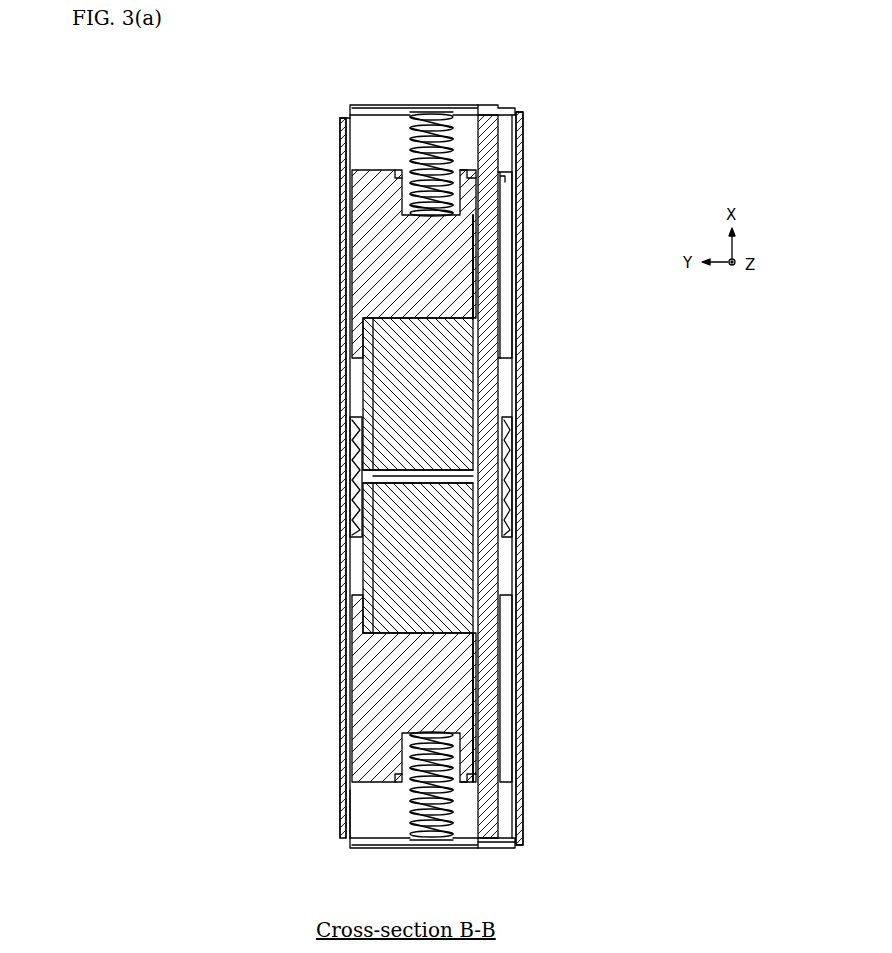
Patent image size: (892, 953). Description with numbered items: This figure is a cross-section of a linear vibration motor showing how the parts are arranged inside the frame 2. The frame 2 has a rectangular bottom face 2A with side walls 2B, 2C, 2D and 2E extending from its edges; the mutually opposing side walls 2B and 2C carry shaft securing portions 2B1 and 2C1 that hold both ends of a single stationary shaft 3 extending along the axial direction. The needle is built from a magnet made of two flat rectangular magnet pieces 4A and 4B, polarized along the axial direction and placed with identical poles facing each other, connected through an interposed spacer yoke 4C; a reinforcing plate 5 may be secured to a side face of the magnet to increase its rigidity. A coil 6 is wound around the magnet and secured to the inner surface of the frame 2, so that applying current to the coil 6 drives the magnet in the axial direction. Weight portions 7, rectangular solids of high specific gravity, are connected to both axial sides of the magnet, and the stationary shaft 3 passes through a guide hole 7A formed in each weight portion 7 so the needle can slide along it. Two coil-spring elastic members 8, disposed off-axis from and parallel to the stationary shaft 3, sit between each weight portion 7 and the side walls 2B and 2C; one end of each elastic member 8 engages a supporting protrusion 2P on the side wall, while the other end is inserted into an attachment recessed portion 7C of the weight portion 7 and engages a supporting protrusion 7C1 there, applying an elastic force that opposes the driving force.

The frame 2 is at (518, 846).
The bottom face 2A is at (352, 805).
The side wall 2B is at (382, 848).
The shaft securing portion 2B1 is at (490, 848).
The side wall 2C is at (385, 105).
The shaft securing portion 2C1 is at (484, 106).
The side wall 2D is at (522, 396).
The side wall 2E is at (342, 384).
The supporting protrusion 2P is at (412, 122).
The stationary shaft 3 is at (524, 152).
The magnet piece 4A is at (476, 366).
The magnet piece 4B is at (476, 560).
The spacer yoke 4C is at (478, 470).
The reinforcing plate 5 is at (354, 566).
The coil 6 is at (500, 430).
The weight portion 7 is at (352, 248).
The guide hole 7A is at (500, 246).
The attachment recessed portion 7C is at (400, 206).
The supporting protrusion 7C1 is at (490, 212).
The elastic member 8 is at (410, 152).